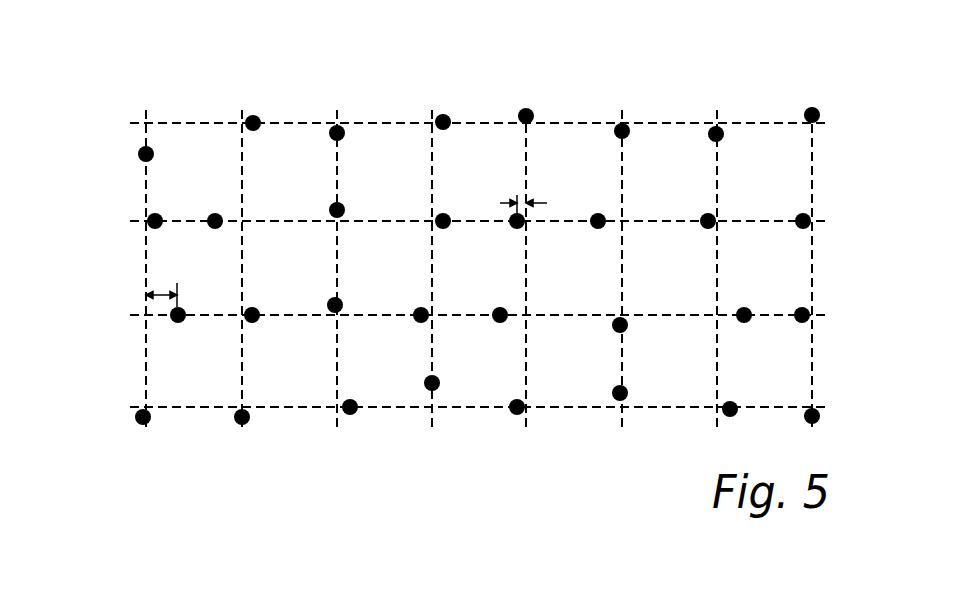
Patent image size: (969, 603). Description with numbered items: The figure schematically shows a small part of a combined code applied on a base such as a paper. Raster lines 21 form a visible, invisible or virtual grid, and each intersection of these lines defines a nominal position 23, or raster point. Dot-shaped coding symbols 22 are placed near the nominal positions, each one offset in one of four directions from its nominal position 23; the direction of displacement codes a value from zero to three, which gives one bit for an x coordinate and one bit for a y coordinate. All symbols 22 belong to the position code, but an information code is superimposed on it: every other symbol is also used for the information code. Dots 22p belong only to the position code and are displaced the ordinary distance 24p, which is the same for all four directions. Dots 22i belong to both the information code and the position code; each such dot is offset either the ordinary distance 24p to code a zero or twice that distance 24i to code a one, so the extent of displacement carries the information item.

The raster lines 21 is at (147, 112).
The coding symbols 22 is at (526, 116).
The position code dots 22p is at (258, 122).
The information code dots 22i is at (342, 128).
The nominal position 23 is at (337, 222).
The ordinary displacement distance 24p is at (501, 203).
The doubled displacement distance 24i is at (160, 293).